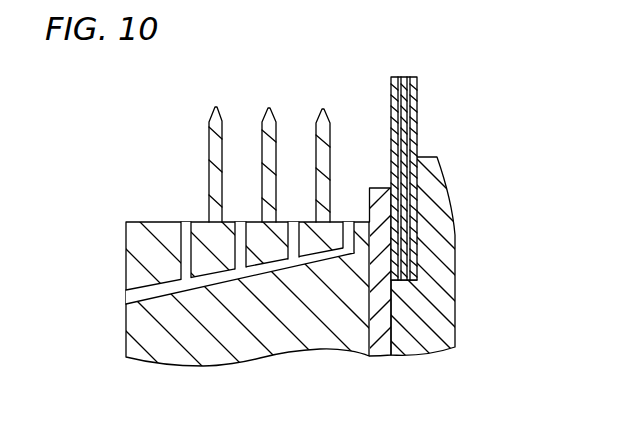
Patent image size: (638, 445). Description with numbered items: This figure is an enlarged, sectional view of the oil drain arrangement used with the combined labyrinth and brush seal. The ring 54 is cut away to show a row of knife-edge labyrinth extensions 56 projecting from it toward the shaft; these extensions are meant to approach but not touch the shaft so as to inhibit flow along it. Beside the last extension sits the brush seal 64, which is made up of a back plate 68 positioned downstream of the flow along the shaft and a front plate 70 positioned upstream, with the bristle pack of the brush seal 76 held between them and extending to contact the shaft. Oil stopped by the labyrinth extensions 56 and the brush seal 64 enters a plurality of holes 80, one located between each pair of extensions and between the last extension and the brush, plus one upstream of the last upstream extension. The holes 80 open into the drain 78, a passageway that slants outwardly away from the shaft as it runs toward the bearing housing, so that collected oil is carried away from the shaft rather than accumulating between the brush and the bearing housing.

The ring 54 is at (142, 335).
The labyrinth extensions 56 is at (322, 112).
The brush seal 64 is at (456, 247).
The back plate 68 is at (450, 204).
The front plate 70 is at (380, 354).
The brush seal 76 is at (417, 131).
The drain 78 is at (218, 278).
The holes 80 is at (187, 228).